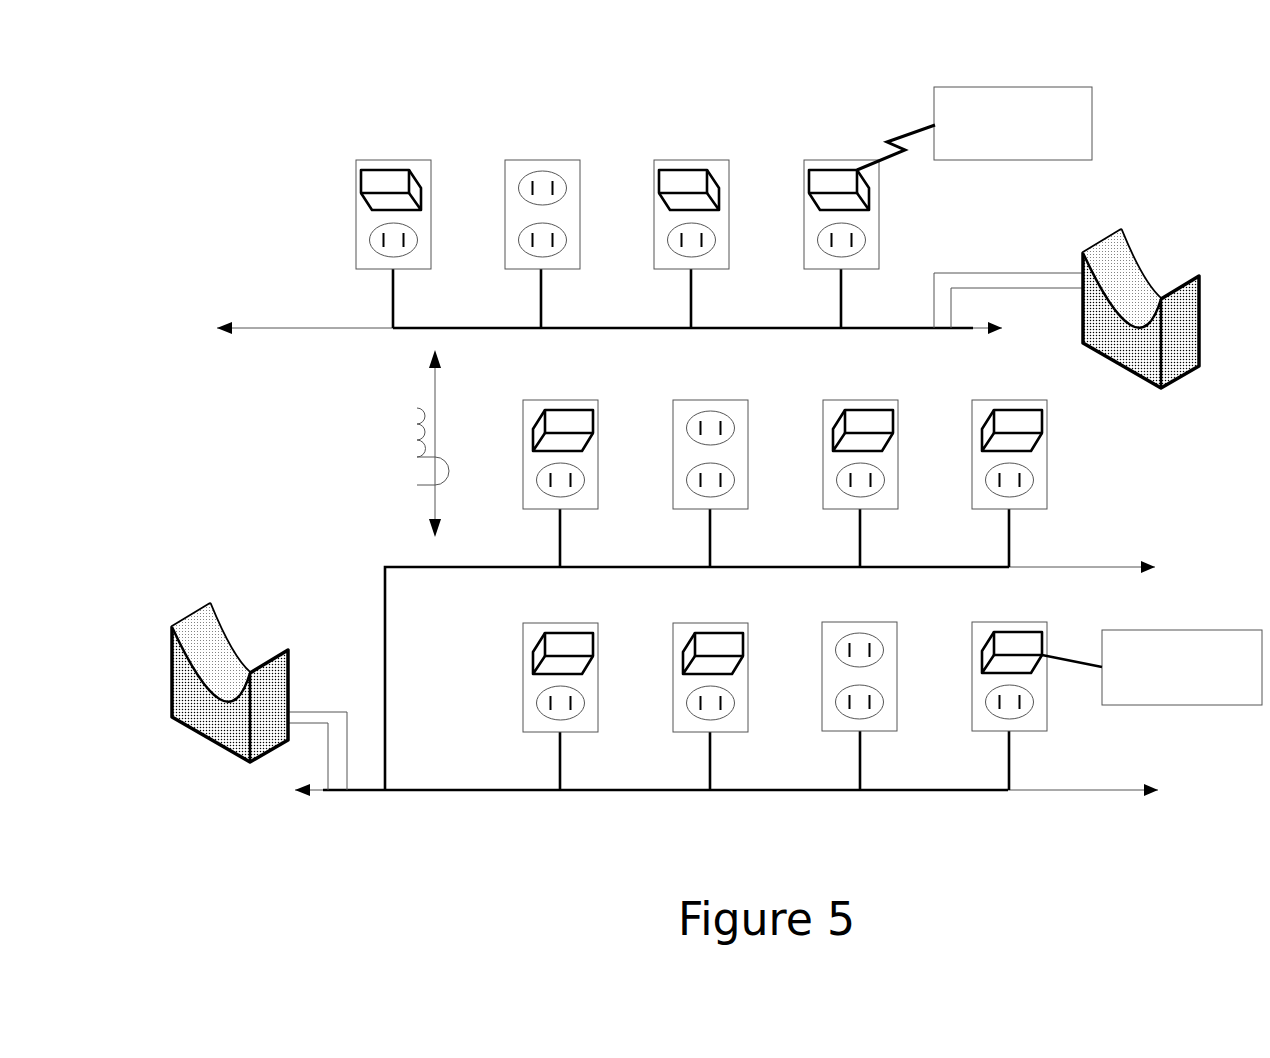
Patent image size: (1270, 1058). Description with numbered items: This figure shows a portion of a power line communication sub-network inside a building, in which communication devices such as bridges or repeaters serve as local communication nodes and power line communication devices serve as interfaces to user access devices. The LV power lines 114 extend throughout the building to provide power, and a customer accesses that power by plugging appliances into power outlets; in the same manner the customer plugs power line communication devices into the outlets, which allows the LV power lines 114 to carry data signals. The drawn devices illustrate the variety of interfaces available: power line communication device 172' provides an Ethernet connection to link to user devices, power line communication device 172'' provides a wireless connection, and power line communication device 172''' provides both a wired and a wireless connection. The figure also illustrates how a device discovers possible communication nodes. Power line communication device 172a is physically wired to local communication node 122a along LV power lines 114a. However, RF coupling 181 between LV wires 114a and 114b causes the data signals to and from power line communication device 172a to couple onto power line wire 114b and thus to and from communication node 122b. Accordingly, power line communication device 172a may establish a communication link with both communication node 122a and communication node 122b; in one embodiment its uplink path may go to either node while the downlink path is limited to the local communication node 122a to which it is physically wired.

The LV power lines 114 is at (512, 785).
The LV power lines 114a is at (397, 562).
The LV power line wire 114b is at (337, 323).
The local communication node 122a is at (217, 620).
The communication node 122b is at (1088, 247).
The power line communication device 172' is at (978, 632).
The power line communication device 172'' is at (793, 171).
The power line communication device 172''' is at (820, 411).
The power line communication device 172a is at (577, 410).
The RF coupling 181 is at (380, 434).